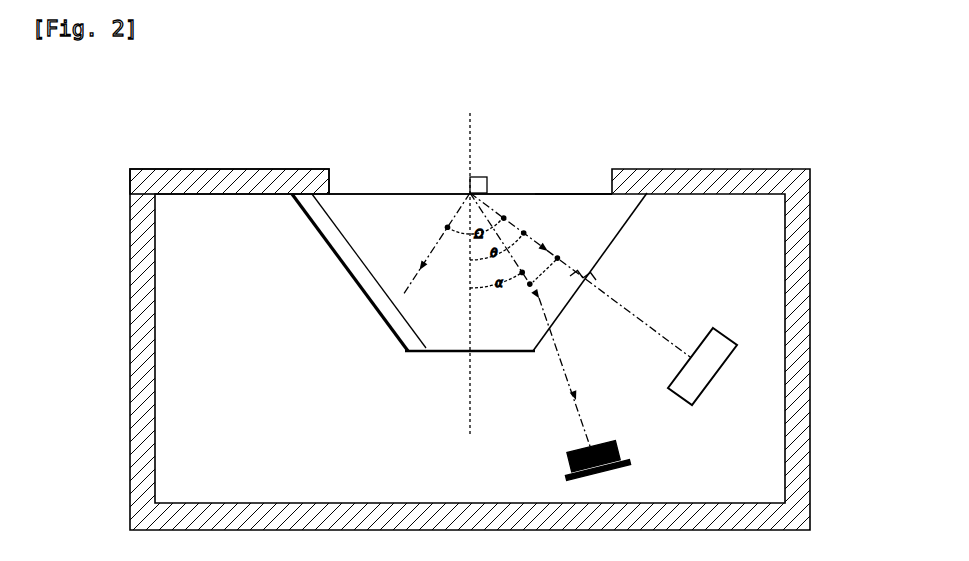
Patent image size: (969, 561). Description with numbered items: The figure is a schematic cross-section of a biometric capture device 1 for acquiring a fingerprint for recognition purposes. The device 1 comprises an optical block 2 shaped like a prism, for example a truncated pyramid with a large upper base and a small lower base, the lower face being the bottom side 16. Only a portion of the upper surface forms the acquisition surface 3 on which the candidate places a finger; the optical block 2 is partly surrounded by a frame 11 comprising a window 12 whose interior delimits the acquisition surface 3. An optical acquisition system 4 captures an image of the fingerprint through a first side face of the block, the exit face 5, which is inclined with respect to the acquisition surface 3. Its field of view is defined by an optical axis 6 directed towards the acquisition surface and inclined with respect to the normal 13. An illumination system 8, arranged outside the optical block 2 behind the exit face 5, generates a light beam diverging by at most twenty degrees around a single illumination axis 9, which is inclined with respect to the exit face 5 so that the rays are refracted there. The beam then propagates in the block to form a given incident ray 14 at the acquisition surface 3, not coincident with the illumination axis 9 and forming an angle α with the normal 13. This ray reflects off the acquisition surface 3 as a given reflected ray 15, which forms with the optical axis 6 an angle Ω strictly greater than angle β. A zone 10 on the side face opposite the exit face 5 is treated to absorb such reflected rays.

The biometric capture device 1 is at (431, 349).
The optical block 2 is at (393, 196).
The acquisition surface 3 is at (551, 194).
The optical acquisition system 4 is at (708, 375).
The exit face 5 is at (639, 208).
The optical axis 6 is at (657, 331).
The illumination system 8 is at (617, 472).
The illumination axis 9 is at (584, 425).
The zone treated to absorb light rays 10 is at (366, 286).
The frame 11 is at (139, 214).
The window 12 is at (330, 182).
The normal 13 is at (471, 133).
The given incident ray 14 is at (545, 312).
The given reflected ray 15 is at (451, 222).
The bottom side 16 is at (438, 353).